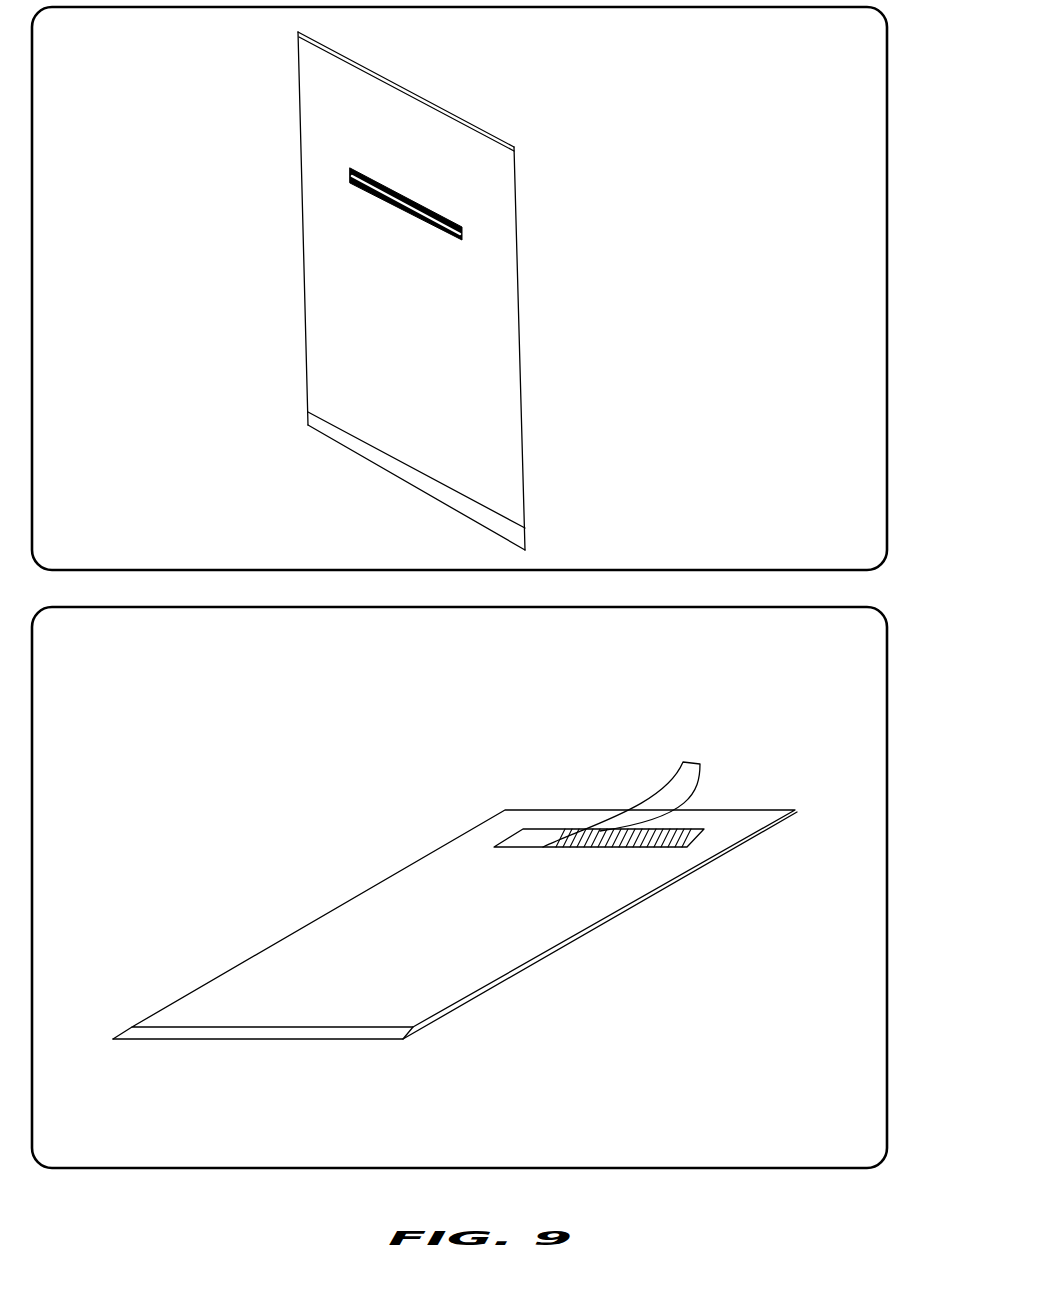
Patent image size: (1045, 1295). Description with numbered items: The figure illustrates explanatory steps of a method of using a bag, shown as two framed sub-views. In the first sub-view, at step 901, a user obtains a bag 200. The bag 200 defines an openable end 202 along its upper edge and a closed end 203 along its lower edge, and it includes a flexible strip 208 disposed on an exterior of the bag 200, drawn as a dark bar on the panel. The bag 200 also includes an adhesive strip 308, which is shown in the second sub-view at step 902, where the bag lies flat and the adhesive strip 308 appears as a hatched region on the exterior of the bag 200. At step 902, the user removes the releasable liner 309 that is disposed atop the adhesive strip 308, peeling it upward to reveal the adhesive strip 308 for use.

The step 901 is at (888, 198).
The step 902 is at (888, 738).
The bag 200 is at (468, 291).
The openable end 202 is at (447, 93).
The closed end 203 is at (352, 459).
The flexible strip 208 is at (383, 198).
The adhesive strip 308 is at (680, 838).
The releasable liner 309 is at (665, 786).